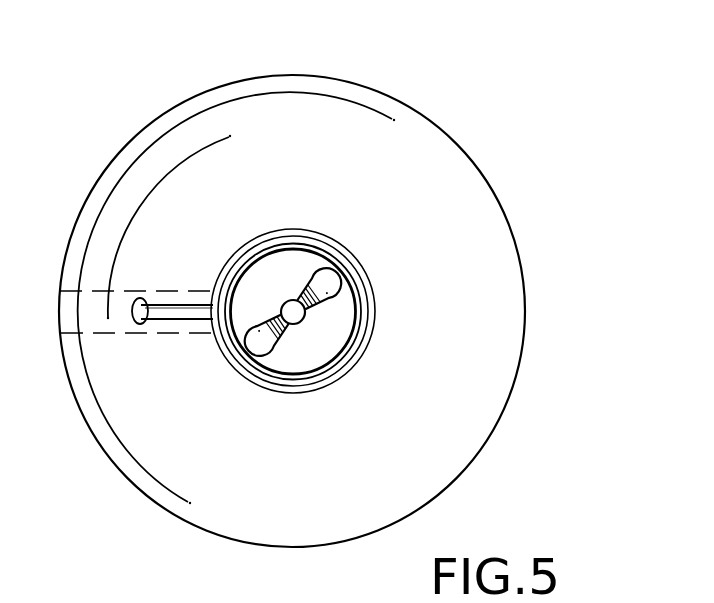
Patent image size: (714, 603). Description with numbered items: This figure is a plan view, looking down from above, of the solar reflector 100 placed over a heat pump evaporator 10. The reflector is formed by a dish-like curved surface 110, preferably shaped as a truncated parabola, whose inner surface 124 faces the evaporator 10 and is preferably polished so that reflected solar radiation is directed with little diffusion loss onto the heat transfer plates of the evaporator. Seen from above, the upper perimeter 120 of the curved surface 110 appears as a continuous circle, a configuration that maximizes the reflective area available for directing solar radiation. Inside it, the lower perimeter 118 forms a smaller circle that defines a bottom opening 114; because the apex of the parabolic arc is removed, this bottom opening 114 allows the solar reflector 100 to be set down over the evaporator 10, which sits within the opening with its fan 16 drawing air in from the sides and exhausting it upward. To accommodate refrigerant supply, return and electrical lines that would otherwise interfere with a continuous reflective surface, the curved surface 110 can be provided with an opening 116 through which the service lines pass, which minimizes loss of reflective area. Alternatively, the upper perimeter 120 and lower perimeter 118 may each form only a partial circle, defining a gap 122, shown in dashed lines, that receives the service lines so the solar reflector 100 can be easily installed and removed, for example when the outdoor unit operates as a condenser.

The solar reflector 100 is at (494, 114).
The curved surface 110 is at (152, 177).
The upper perimeter 120 is at (195, 93).
The gap 122 is at (175, 291).
The opening 116 is at (147, 323).
The lower perimeter 118 is at (305, 393).
The bottom opening 114 is at (292, 228).
The heat pump evaporator 10 is at (338, 298).
The fan 16 is at (329, 303).
The inner surface 124 is at (251, 477).